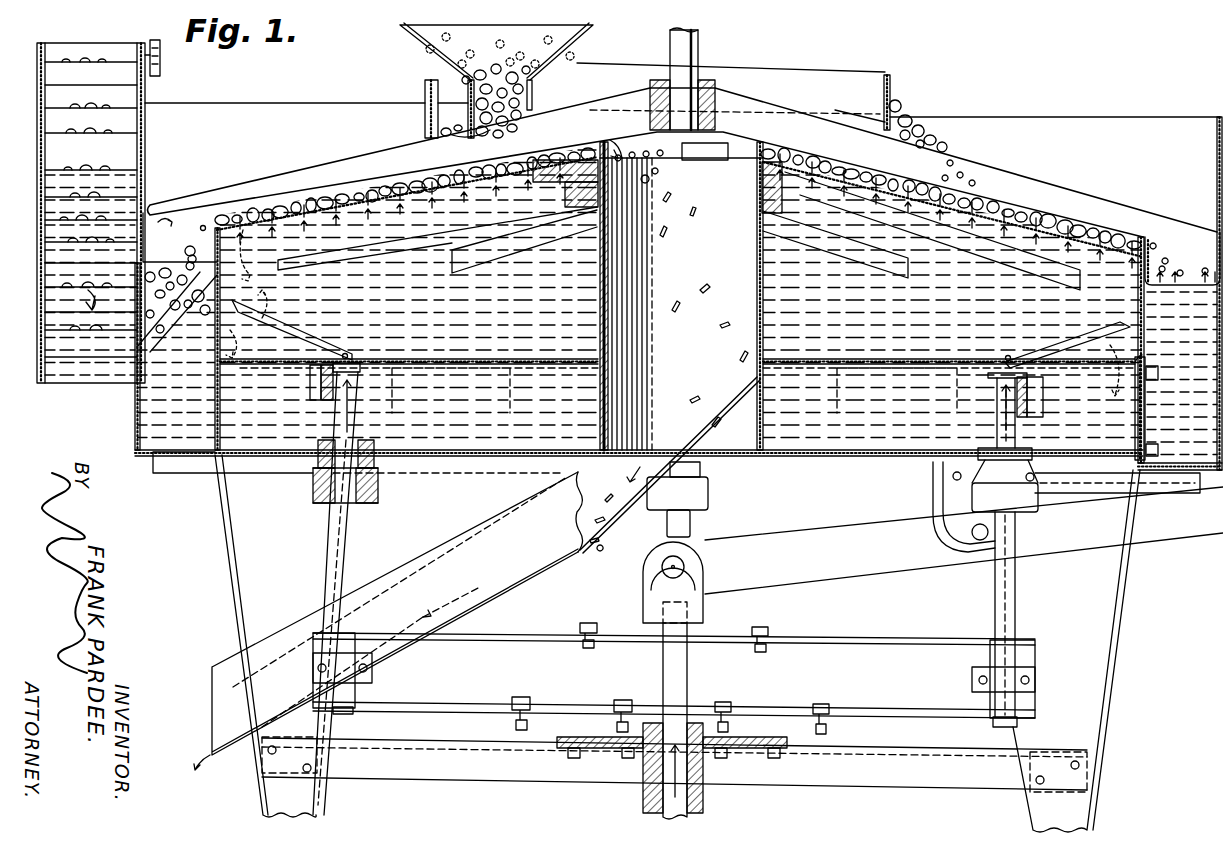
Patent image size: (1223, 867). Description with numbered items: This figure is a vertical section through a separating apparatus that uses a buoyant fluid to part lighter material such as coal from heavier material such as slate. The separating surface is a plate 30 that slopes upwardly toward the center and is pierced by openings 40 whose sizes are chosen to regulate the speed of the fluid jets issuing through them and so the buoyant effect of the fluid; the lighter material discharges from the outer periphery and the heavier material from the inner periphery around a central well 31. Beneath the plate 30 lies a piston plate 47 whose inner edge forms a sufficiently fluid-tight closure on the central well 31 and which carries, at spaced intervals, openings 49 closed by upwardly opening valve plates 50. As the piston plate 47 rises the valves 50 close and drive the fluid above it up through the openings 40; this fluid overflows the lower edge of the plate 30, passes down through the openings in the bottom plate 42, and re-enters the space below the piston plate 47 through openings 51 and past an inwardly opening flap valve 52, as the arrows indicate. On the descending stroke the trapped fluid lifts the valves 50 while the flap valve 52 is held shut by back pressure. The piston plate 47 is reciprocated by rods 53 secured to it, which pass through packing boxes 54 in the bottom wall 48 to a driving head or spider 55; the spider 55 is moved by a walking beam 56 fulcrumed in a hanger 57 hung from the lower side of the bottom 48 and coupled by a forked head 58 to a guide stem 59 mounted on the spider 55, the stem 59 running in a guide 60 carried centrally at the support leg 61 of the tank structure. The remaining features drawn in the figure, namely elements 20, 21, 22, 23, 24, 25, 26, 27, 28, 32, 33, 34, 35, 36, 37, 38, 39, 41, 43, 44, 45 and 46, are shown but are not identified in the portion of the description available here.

The hopper 20 is at (440, 45).
The lip 21 is at (485, 133).
The inclined plate 22 is at (553, 116).
The shaft 23 is at (670, 40).
The plate 24 is at (890, 82).
The plate 25 is at (827, 112).
The gate plate 26 is at (425, 95).
The chute wall 27 is at (430, 122).
The material 28 is at (700, 107).
The separating plate 30 is at (455, 150).
The central well 31 is at (612, 282).
The compartment 32 is at (1140, 362).
The deflector 33 is at (823, 248).
The partition 34 is at (757, 207).
The deflector plates 35 is at (378, 230).
The opening 36 is at (620, 162).
The particles 37 is at (1160, 170).
The particles 38 is at (1067, 208).
The particles 39 is at (200, 226).
The openings 40 is at (243, 232).
The side wall 41 is at (1215, 145).
The bottom plate 42 is at (1152, 290).
The pocket 43 is at (1182, 258).
The chute 44 is at (152, 335).
The settling tower 45 is at (88, 372).
The discharge chute 46 is at (507, 592).
The piston plate 47 is at (822, 360).
The bottom wall 48 is at (767, 467).
The openings 49 is at (290, 373).
The valve plates 50 is at (304, 352).
The openings 51 is at (1150, 415).
The flap valve 52 is at (1137, 417).
The rods 53 is at (338, 540).
The packing boxes 54 is at (315, 472).
The driving head or spider 55 is at (823, 640).
The walking beam 56 is at (1177, 530).
The hanger 57 is at (963, 500).
The forked head 58 is at (703, 606).
The guide stem 59 is at (688, 680).
The guide 60 is at (705, 808).
The support leg 61 is at (245, 526).